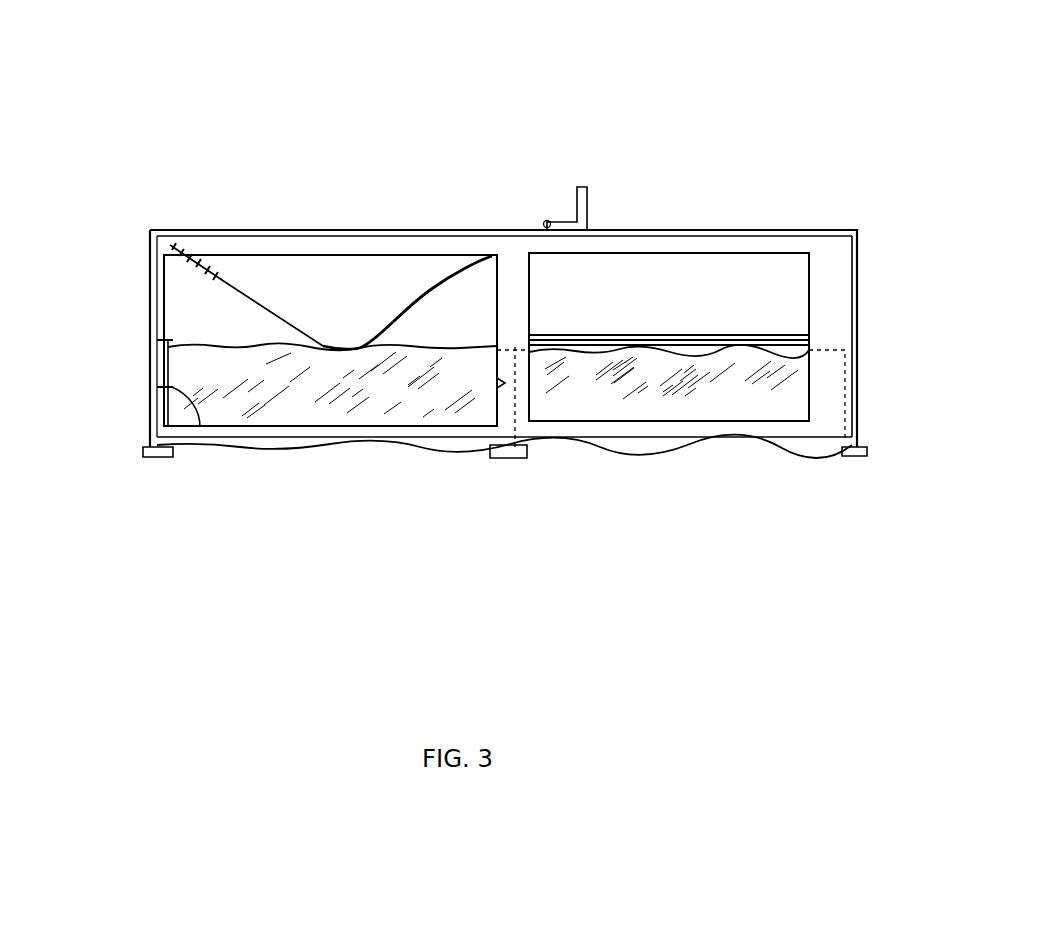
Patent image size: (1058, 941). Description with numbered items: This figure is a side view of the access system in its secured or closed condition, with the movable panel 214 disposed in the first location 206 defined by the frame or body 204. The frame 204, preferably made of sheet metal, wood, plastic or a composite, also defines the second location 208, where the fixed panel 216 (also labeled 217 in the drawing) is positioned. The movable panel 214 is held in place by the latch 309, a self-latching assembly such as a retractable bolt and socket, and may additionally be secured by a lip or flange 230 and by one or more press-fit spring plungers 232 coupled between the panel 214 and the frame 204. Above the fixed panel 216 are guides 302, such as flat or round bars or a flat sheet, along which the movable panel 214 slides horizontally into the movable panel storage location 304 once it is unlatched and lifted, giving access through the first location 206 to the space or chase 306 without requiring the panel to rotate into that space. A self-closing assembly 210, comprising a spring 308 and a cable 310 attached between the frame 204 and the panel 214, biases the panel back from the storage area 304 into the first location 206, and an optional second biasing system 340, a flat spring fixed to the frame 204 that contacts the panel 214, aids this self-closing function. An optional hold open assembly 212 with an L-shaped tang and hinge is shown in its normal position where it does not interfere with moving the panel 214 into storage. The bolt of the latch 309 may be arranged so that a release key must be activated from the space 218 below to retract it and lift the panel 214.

The space or chase 306 is at (503, 29).
The first location 206 is at (401, 199).
The frame or body 204 is at (333, 246).
The second location 208 is at (733, 224).
The movable panel storage location 304 is at (650, 303).
The hold open assembly 212 is at (577, 207).
The spring 308 is at (207, 260).
The cable 310 is at (278, 320).
The self-closing assembly 210 is at (258, 280).
The second biasing system 340 is at (402, 308).
The guides 302 is at (800, 340).
The lip or flange 230 is at (167, 327).
The press-fit spring plungers 232 is at (200, 427).
The movable panel 214 is at (340, 400).
The latch 309 is at (497, 380).
The fixed panel 216 is at (687, 449).
The second fluid 217 is at (680, 385).
The space 218 is at (512, 647).